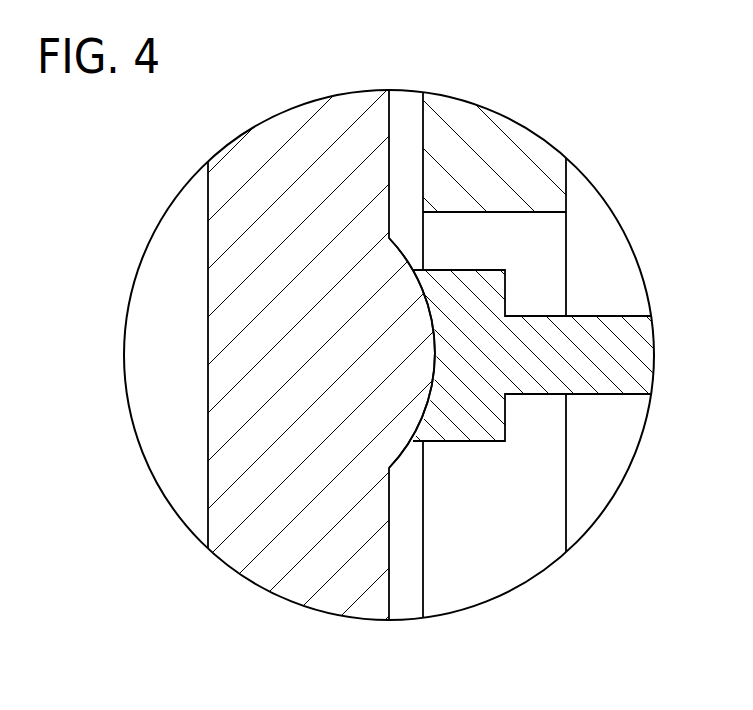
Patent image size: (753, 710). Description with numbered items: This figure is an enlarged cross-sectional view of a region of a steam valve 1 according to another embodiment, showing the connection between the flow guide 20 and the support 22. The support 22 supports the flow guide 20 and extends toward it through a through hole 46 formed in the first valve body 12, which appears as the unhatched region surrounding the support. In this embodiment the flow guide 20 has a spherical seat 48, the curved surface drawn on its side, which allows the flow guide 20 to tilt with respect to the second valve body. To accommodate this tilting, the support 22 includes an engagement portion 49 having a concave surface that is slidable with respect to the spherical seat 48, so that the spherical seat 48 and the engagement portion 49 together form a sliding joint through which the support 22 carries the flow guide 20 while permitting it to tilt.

The steam valve 1 is at (600, 147).
The first valve body 12 is at (540, 547).
The flow guide 20 is at (302, 570).
The support 22 is at (587, 314).
The through hole 46 is at (490, 557).
The spherical seat 48 is at (438, 357).
The engagement portion 49 is at (463, 272).